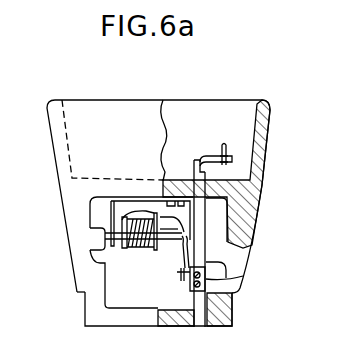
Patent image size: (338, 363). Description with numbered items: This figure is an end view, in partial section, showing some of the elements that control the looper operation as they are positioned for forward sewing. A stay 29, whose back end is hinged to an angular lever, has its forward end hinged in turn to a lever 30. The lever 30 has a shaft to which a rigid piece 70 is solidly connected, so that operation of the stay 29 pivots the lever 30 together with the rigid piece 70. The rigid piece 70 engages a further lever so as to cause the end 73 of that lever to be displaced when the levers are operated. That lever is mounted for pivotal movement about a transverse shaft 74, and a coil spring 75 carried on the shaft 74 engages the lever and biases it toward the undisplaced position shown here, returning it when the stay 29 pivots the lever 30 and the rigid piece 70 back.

The stay 29 is at (226, 146).
The lever 30 is at (210, 156).
The rigid piece 70 is at (244, 276).
The end of the lever 73 is at (125, 250).
The transverse shaft 74 is at (90, 237).
The coil spring 75 is at (150, 250).